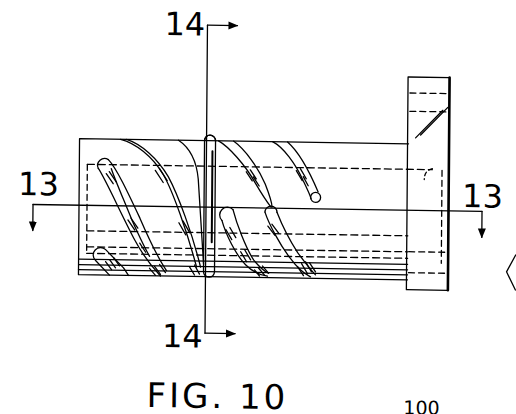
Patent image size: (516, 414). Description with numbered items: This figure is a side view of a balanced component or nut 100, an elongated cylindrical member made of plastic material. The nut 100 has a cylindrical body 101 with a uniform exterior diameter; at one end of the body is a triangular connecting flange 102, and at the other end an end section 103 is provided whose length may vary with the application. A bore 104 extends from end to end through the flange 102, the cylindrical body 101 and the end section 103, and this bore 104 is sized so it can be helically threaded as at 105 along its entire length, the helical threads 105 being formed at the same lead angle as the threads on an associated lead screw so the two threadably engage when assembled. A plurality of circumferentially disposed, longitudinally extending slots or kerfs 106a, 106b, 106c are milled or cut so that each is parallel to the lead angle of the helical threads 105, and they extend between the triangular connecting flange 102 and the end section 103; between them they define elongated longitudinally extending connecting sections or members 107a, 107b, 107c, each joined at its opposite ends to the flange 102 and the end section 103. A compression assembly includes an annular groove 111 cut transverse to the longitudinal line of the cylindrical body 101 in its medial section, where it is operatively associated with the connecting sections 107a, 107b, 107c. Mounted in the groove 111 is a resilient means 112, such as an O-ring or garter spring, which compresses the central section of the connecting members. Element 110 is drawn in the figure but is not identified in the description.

The balanced component or nut 100 is at (260, 107).
The cylindrical body 101 is at (140, 279).
The triangular connecting flange 102 is at (451, 82).
The end section 103 is at (105, 150).
The bore 104 is at (413, 230).
The helical threads 105 is at (453, 175).
The slot or kerf 106a is at (223, 211).
The slot or kerf 106b is at (322, 196).
The slot or kerf 106c is at (300, 275).
The connecting section or member 107a is at (232, 278).
The connecting section or member 107b is at (261, 153).
The connecting section or member 107c is at (220, 154).
The pin 110 is at (205, 126).
The annular groove 111 is at (202, 280).
The resilient means 112 is at (202, 138).